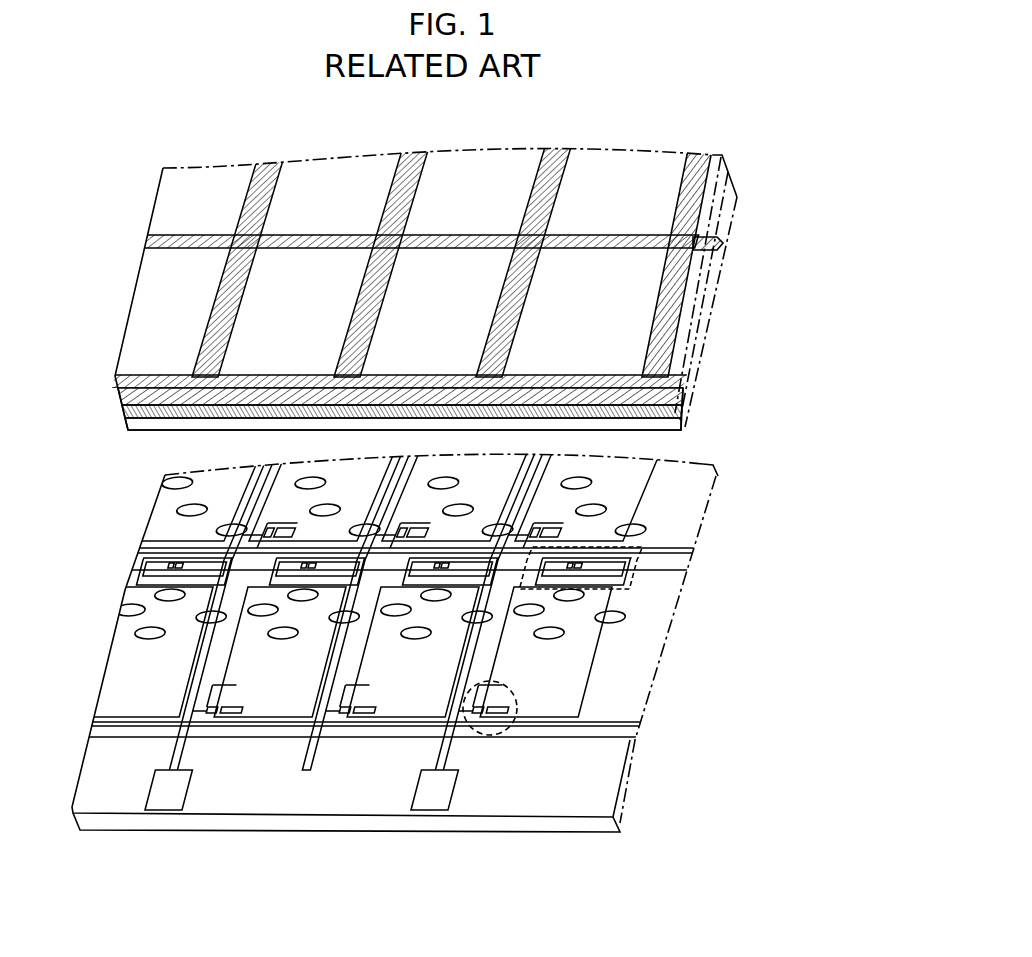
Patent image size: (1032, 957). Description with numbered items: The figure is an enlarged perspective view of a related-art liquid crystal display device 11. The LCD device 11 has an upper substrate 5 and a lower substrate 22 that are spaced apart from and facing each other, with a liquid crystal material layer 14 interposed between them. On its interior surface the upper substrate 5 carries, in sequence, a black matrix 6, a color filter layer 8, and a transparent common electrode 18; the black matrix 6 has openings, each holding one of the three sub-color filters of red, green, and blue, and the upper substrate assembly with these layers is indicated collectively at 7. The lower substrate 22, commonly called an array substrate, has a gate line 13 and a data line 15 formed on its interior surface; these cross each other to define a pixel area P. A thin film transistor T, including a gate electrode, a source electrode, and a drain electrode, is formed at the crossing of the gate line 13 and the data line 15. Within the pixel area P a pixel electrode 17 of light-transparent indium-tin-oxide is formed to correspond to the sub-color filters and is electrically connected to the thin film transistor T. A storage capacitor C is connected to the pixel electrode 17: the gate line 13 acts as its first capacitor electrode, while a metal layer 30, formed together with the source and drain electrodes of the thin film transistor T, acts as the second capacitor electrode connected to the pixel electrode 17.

The upper substrate 5 is at (113, 394).
The black matrix 6 is at (723, 247).
The color filter substrate 7 is at (795, 203).
The color filter layer 8 is at (657, 203).
The transparent common electrode 18 is at (685, 428).
The LCD device 11 is at (793, 688).
The gate line 13 is at (600, 739).
The liquid crystal material layer 14 is at (648, 510).
The data line 15 is at (440, 760).
The pixel electrode 17 is at (590, 696).
The lower substrate 22 is at (583, 825).
The metal layer 30 is at (622, 567).
The storage capacitor C is at (622, 585).
The pixel area P is at (632, 653).
The thin film transistor T is at (510, 735).